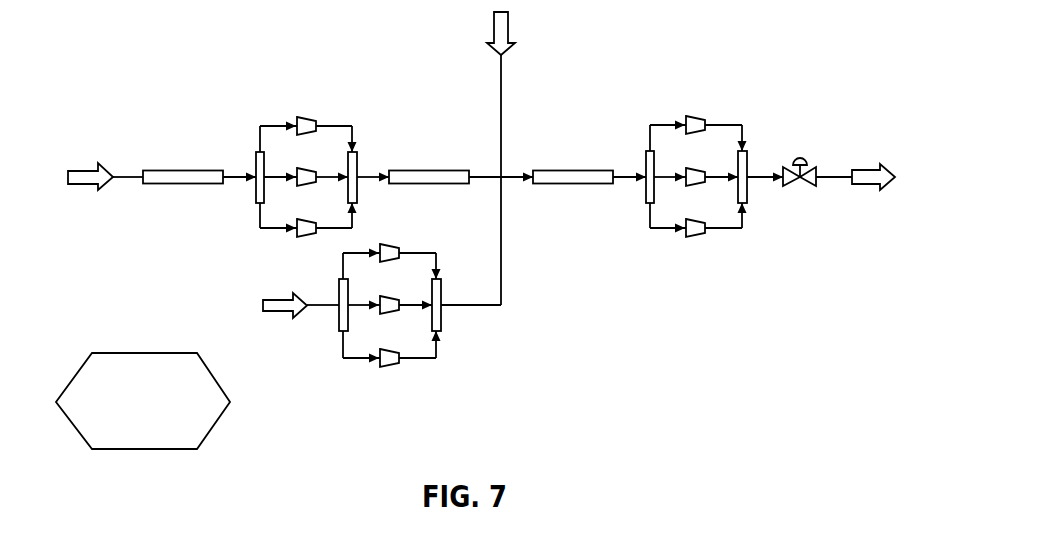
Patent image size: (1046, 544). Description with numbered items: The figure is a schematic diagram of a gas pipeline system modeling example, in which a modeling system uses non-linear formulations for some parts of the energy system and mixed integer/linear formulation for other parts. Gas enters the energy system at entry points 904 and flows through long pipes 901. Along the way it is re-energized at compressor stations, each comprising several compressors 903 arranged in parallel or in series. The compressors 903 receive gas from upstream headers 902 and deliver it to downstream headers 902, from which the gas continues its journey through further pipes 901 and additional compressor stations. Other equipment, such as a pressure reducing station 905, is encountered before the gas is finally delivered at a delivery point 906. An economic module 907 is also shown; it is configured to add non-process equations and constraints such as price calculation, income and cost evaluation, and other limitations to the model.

The long pipes 901 is at (182, 170).
The headers 902 is at (254, 188).
The compressors 903 is at (305, 117).
The entry points 904 is at (83, 168).
The pressure reducing station 905 is at (787, 167).
The delivery point 906 is at (867, 184).
The economic module 907 is at (125, 353).